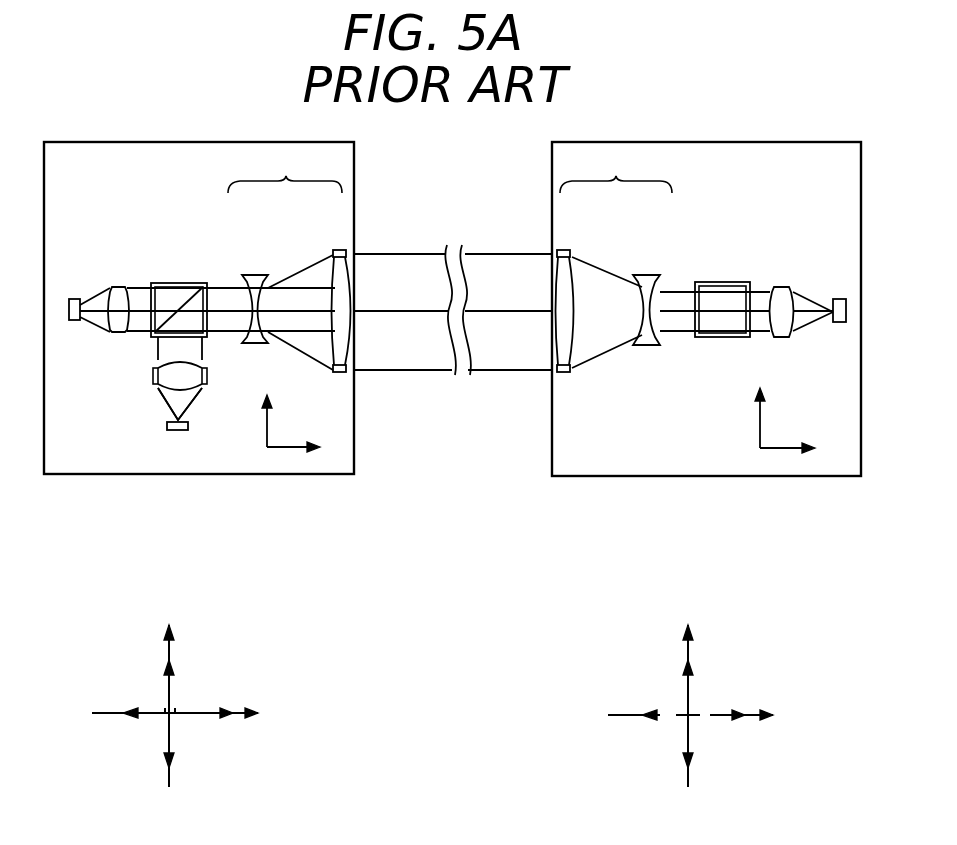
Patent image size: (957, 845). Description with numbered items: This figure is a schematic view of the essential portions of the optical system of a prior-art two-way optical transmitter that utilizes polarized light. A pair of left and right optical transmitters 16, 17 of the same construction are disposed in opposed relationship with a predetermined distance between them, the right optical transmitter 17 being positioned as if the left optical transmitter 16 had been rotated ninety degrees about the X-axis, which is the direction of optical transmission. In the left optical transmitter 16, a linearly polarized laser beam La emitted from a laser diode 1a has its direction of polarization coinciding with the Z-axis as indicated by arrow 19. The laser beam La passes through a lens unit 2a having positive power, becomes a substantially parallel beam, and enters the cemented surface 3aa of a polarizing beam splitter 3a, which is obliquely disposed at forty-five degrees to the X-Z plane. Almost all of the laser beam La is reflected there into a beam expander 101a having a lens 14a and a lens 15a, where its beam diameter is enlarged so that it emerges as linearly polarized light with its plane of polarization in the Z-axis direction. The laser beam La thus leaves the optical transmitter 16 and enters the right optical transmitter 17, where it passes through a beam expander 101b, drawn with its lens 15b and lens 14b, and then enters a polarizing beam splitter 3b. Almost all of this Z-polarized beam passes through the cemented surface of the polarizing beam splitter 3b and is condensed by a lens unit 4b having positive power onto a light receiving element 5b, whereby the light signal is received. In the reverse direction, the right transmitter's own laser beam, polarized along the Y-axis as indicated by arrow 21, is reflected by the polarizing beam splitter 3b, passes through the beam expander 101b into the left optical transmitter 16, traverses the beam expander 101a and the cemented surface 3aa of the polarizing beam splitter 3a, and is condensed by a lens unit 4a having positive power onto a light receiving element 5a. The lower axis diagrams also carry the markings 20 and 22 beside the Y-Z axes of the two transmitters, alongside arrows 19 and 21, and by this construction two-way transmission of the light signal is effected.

The laser diode 1a is at (167, 427).
The lens unit 2a is at (153, 376).
The polarizing beam splitter 3a is at (165, 283).
The cemented surface 3aa is at (187, 297).
The lens unit 4a is at (117, 287).
The light receiving element 5a is at (73, 299).
The lens 14a is at (250, 275).
The lens 15a is at (337, 250).
The beam expander 101a is at (285, 169).
The beam expander 101b is at (616, 169).
The lens 15b is at (562, 250).
The lens 14b is at (650, 275).
The polarizing beam splitter 3b is at (710, 282).
The lens unit 4b is at (780, 287).
The light receiving element 5b is at (838, 299).
The optical transmitter 16 is at (320, 475).
The optical transmitter 17 is at (825, 477).
The arrow 19 is at (197, 708).
The received light polarization direction 20 is at (171, 723).
The arrow 21 is at (690, 690).
The received light polarization direction 22 is at (722, 718).
The laser beam La is at (193, 397).